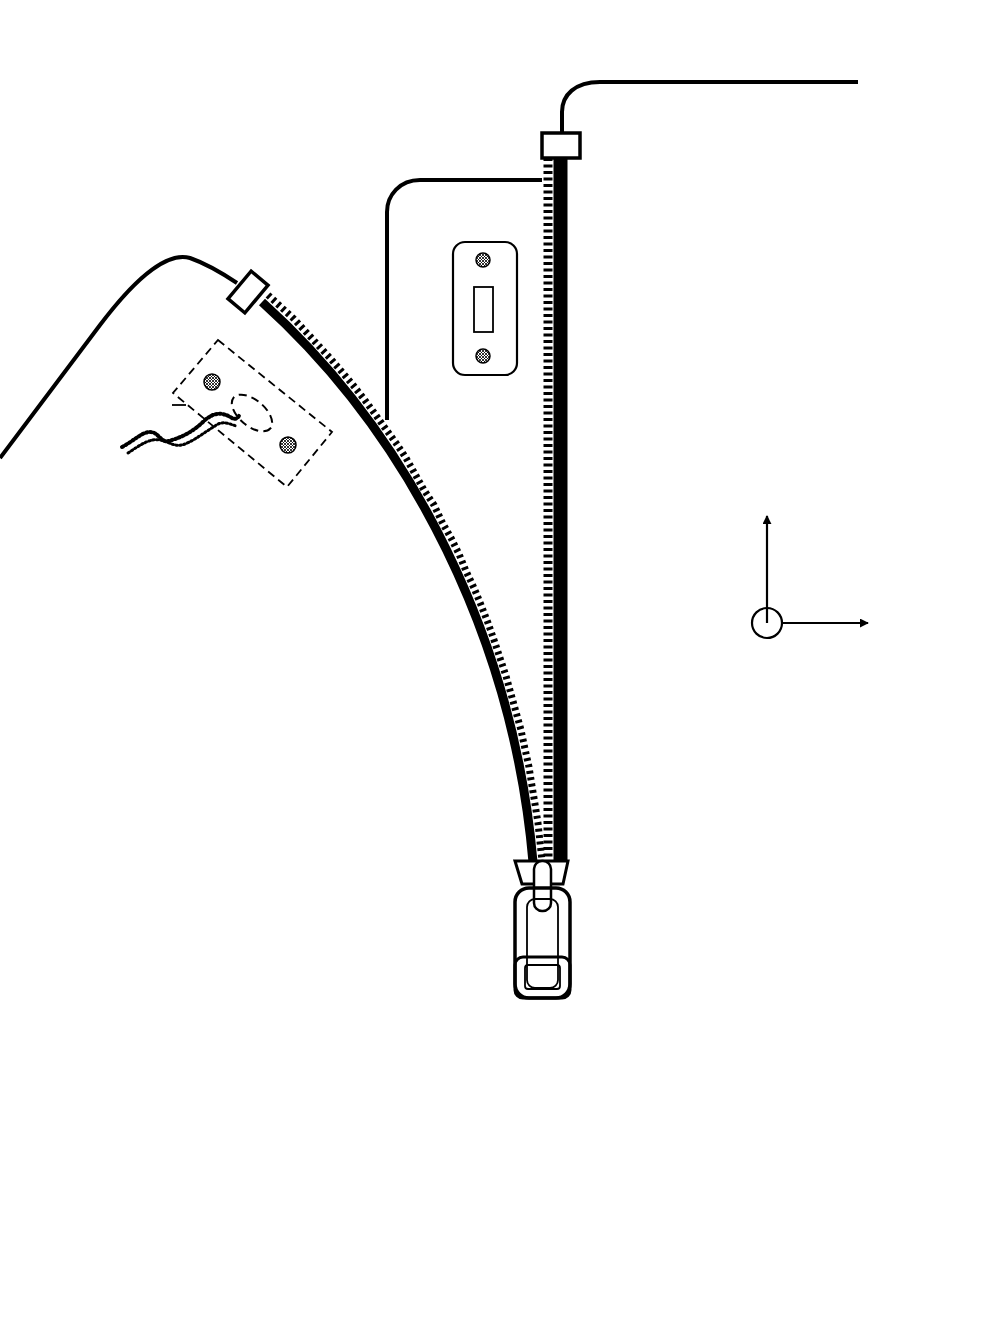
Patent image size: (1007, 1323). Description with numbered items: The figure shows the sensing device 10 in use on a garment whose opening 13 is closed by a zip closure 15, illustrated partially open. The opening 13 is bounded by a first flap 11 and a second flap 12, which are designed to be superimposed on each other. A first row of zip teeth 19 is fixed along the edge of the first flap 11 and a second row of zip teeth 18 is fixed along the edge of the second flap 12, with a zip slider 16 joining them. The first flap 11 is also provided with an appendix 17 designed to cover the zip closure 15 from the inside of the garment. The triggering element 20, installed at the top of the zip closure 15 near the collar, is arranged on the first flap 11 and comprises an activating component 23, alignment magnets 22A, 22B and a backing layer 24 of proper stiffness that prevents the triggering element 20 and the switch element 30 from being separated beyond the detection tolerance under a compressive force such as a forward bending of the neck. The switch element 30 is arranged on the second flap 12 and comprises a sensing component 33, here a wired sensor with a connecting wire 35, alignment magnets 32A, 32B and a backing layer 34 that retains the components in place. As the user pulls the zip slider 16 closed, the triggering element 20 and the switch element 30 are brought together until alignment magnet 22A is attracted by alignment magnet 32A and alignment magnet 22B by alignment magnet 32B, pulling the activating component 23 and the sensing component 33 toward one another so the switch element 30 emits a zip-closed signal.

The sensing device 10 is at (98, 180).
The first flap 11 is at (612, 80).
The second flap 12 is at (93, 318).
The opening 13 is at (345, 200).
The zip closure 15 is at (455, 578).
The zip slider 16 is at (512, 903).
The appendix 17 is at (500, 500).
The second row of zip teeth 18 is at (484, 657).
The first row of zip teeth 19 is at (568, 678).
The triggering element 20 is at (456, 278).
The alignment magnet 22A is at (478, 258).
The alignment magnet 22B is at (483, 364).
The activating component 23 is at (478, 292).
The backing layer 24 is at (453, 353).
The switch element 30 is at (182, 374).
The alignment magnet 32A is at (212, 376).
The alignment magnet 32B is at (287, 454).
The sensing component 33 is at (250, 420).
The backing layer 34 is at (172, 405).
The connecting wire 35 is at (148, 440).